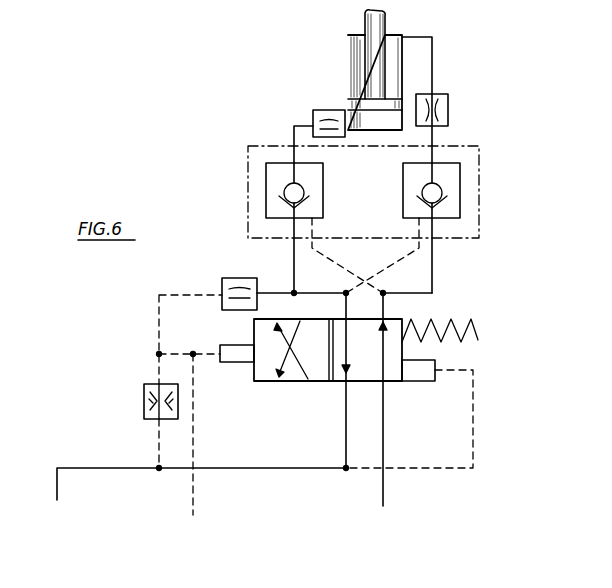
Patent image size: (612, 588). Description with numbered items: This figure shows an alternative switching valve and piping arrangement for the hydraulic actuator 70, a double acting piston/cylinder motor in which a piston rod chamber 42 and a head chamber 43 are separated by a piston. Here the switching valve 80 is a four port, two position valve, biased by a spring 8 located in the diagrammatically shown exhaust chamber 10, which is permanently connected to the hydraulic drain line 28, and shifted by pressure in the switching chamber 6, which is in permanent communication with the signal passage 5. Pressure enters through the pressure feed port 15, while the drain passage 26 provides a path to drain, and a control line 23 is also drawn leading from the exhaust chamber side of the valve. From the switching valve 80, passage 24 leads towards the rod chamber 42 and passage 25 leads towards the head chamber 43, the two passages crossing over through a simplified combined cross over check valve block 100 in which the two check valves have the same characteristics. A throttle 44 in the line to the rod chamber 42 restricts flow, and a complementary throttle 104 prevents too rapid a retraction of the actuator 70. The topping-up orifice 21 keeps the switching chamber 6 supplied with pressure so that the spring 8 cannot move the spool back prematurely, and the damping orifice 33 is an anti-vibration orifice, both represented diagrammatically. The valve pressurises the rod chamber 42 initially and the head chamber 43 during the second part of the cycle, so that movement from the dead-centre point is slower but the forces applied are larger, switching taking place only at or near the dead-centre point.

The piston rod chamber 42 is at (397, 40).
The head chamber 43 is at (367, 123).
The throttle 44 is at (448, 99).
The throttle 104 is at (322, 110).
The actuator 70 is at (290, 103).
The cross over check valve block 100 is at (248, 196).
The topping-up orifice 21 is at (240, 278).
The passage 25 is at (303, 293).
The passage 24 is at (428, 293).
The switching valve 80 is at (488, 331).
The spring 8 is at (467, 323).
The switching chamber 6 is at (227, 363).
The exhaust chamber 10 is at (422, 381).
The control line 23 is at (476, 424).
The drain passage 26 is at (348, 408).
The pressure feed port 15 is at (386, 422).
The damping orifice 33 is at (144, 400).
The signal passage 5 is at (194, 430).
The hydraulic drain line 28 is at (88, 470).